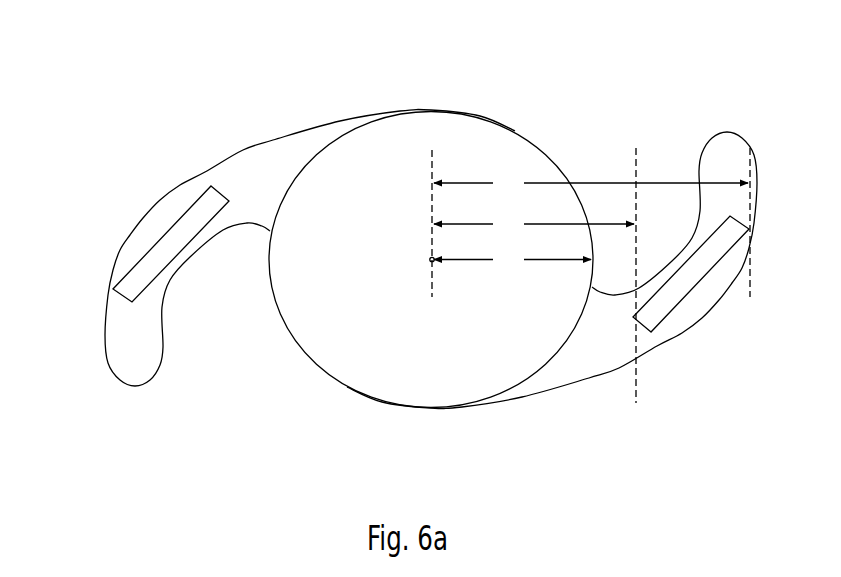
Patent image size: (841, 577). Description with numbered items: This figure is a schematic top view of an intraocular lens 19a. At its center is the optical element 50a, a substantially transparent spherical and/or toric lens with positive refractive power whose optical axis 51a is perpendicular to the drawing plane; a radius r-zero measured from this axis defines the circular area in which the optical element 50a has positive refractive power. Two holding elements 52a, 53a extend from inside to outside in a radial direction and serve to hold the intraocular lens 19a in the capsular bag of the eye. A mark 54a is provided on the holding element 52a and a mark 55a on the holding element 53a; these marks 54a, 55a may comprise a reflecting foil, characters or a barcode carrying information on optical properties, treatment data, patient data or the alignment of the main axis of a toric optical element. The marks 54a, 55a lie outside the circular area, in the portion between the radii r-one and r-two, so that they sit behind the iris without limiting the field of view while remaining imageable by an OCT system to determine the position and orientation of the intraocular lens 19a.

The intraocular lens 19a is at (415, 247).
The optical element 50a is at (440, 409).
The optical axis 51a is at (430, 261).
The holding element 52a is at (744, 319).
The holding element 53a is at (104, 235).
The mark 54a is at (666, 318).
The mark 55a is at (198, 197).